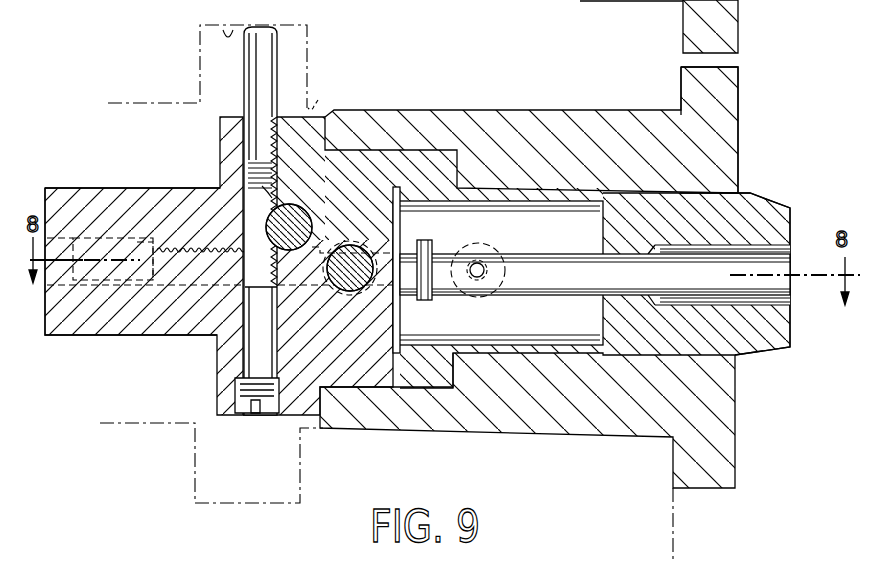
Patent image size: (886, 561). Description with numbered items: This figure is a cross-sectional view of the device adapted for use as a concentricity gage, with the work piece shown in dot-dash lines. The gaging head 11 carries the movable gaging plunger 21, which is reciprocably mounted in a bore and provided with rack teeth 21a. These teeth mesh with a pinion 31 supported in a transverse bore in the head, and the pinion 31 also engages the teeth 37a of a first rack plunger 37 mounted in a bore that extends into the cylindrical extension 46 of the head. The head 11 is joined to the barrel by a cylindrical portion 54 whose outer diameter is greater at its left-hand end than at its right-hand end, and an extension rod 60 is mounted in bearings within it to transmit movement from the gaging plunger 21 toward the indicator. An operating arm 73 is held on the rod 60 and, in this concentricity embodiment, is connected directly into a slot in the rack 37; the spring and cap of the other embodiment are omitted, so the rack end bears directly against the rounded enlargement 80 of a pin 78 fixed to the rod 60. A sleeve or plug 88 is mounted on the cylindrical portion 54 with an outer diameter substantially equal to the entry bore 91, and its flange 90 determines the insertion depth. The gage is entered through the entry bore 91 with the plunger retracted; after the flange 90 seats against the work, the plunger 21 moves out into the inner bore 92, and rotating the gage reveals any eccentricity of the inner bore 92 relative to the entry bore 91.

The gaging head 11 is at (558, 2).
The gaging plunger 21 is at (280, 64).
The rack teeth 21a is at (268, 195).
The pinion 31 is at (330, 248).
The first rack plunger 37 is at (187, 283).
The rack teeth 37a is at (185, 243).
The cylindrical extension 46 is at (100, 308).
The cylindrical portion 54 is at (742, 208).
The extension rod 60 is at (560, 277).
The operating arm 73 is at (424, 273).
The pin 78 is at (476, 263).
The rounded enlargement 80 is at (492, 293).
The sleeve or plug 88 is at (535, 124).
The flange 90 is at (730, 101).
The entry bore 91 is at (320, 99).
The inner bore 92 is at (226, 28).